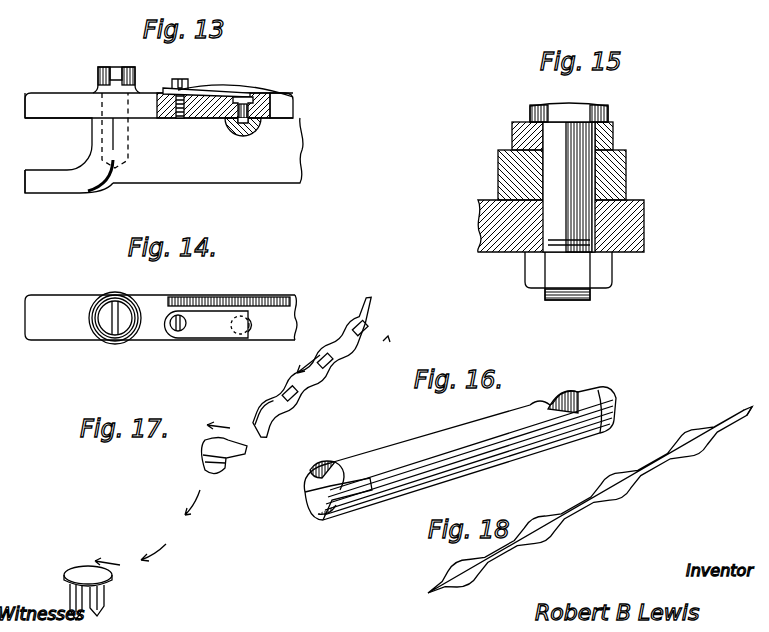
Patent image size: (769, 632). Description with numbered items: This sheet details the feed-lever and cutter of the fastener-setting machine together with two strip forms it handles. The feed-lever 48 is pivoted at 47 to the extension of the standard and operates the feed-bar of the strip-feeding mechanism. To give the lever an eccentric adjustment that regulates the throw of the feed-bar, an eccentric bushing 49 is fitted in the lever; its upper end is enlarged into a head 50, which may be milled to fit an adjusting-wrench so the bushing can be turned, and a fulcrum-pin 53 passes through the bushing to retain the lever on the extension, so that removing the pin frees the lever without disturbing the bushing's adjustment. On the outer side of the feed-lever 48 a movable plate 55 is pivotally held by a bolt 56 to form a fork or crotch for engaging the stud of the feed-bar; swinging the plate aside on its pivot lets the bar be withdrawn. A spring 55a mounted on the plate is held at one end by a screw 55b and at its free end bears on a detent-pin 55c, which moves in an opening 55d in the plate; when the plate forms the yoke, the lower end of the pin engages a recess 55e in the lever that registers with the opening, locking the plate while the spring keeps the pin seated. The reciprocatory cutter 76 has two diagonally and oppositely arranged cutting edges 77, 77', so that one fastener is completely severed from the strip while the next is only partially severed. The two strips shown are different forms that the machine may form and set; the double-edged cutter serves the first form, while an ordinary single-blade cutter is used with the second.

In FIG. 15, the pivot 47 is at (612, 213).
In FIG. 13, the feed-lever 48 is at (283, 178).
In FIG. 15, the feed-lever 48 is at (628, 178).
In FIG. 15, the eccentric bushing 49 is at (500, 167).
In FIG. 15, the head of the eccentric bushing 50 is at (616, 138).
In FIG. 15, the fulcrum-pin 53 is at (600, 113).
In FIG. 13, the movable plate 55 is at (88, 108).
In FIG. 14, the movable plate 55 is at (70, 333).
In FIG. 13, the spring 55a is at (214, 91).
In FIG. 14, the spring 55a is at (216, 330).
In FIG. 13, the screw 55b is at (186, 80).
In FIG. 14, the screw 55b is at (169, 342).
In FIG. 13, the detent-pin 55c is at (288, 96).
In FIG. 14, the detent-pin 55c is at (257, 341).
In FIG. 13, the opening 55d is at (270, 116).
In FIG. 13, the recess 55e is at (233, 135).
In FIG. 13, the bolt 56 is at (133, 83).
In FIG. 14, the bolt 56 is at (118, 312).
In FIG. 16, the reciprocatory cutter 76 is at (440, 436).
In FIG. 16, the cutting edge 77 is at (324, 462).
In FIG. 16, the cutting edge 77' is at (338, 514).